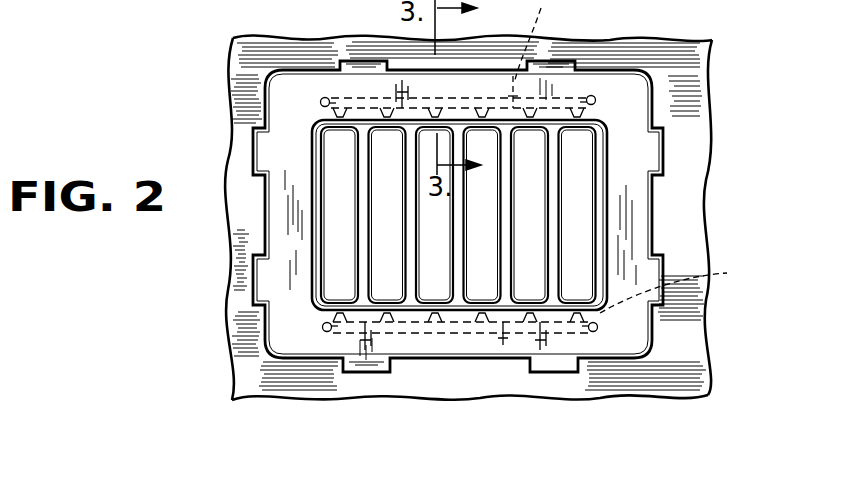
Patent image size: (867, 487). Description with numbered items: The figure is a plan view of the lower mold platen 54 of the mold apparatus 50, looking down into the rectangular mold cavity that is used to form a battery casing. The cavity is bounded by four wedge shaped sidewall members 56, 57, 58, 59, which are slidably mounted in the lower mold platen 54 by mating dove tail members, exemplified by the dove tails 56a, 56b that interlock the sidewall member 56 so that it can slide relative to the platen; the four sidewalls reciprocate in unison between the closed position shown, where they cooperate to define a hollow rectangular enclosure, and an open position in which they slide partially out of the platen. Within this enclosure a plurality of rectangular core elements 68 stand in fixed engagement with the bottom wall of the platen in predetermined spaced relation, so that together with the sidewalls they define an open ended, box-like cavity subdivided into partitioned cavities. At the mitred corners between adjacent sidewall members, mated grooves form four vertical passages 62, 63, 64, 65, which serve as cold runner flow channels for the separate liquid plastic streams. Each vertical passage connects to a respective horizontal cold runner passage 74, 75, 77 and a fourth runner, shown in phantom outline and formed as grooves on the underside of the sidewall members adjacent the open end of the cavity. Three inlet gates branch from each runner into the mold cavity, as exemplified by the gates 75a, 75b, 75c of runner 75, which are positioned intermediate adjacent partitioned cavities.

The mold apparatus 50 is at (212, 291).
The lower mold platen 54 is at (700, 105).
The sidewall member 56 is at (459, 82).
The dove tail 56a is at (357, 63).
The dove tail 56b is at (557, 67).
The sidewall member 57 is at (655, 215).
The sidewall member 58 is at (457, 334).
The sidewall member 59 is at (278, 222).
The vertical passage 62 is at (321, 99).
The vertical passage 63 is at (595, 97).
The vertical passage 64 is at (595, 331).
The vertical passage 65 is at (327, 332).
The core element 68 is at (459, 215).
The horizontal cold runner passage 74 is at (413, 333).
The horizontal cold runner passage 75 is at (503, 333).
The inlet gate 75a is at (487, 333).
The inlet gate 75b is at (537, 333).
The inlet gate 75c is at (683, 287).
The horizontal cold runner passage 77 is at (402, 97).